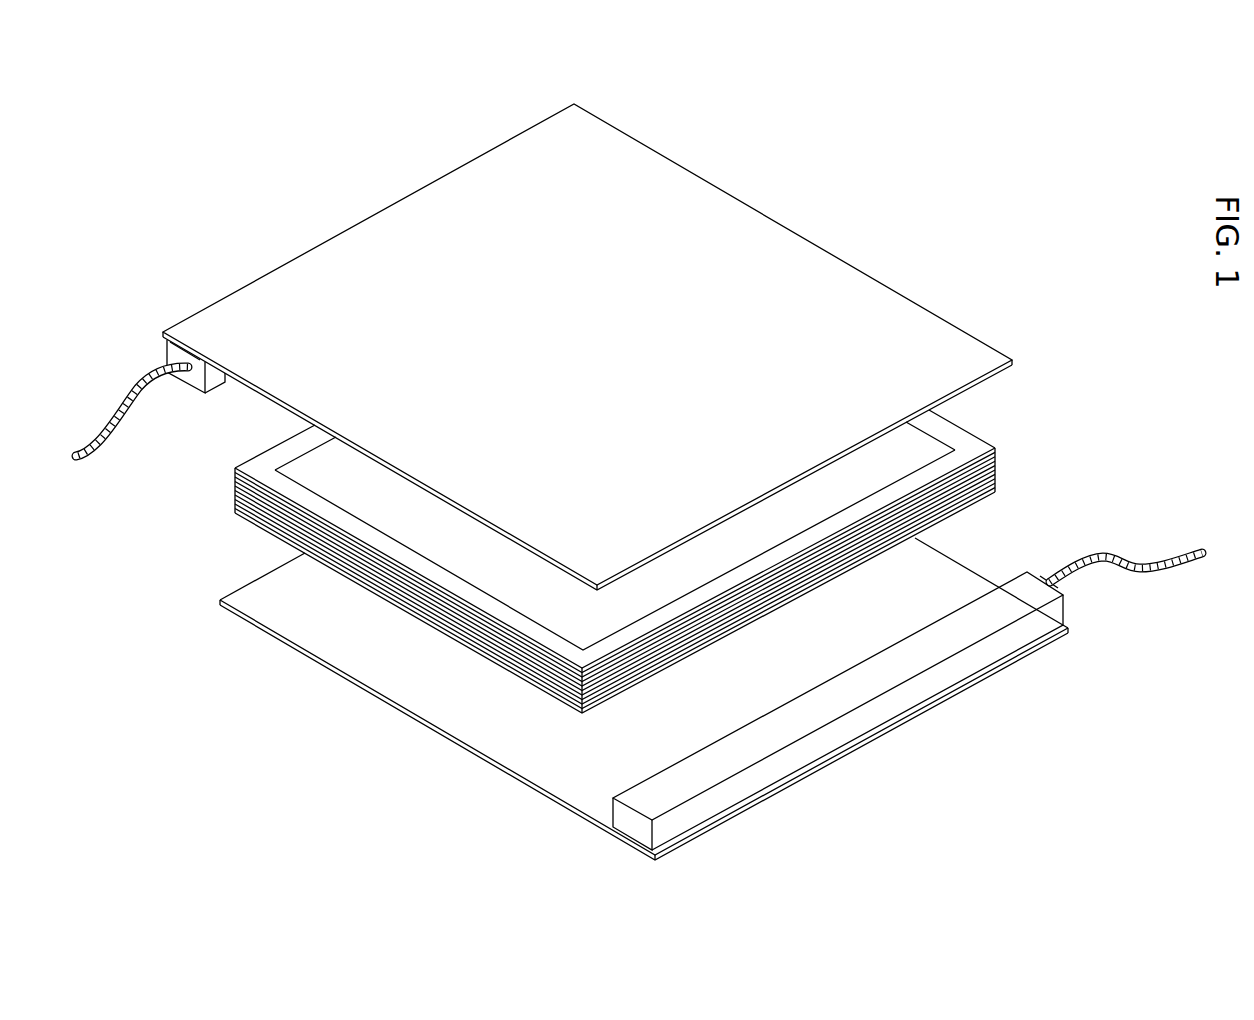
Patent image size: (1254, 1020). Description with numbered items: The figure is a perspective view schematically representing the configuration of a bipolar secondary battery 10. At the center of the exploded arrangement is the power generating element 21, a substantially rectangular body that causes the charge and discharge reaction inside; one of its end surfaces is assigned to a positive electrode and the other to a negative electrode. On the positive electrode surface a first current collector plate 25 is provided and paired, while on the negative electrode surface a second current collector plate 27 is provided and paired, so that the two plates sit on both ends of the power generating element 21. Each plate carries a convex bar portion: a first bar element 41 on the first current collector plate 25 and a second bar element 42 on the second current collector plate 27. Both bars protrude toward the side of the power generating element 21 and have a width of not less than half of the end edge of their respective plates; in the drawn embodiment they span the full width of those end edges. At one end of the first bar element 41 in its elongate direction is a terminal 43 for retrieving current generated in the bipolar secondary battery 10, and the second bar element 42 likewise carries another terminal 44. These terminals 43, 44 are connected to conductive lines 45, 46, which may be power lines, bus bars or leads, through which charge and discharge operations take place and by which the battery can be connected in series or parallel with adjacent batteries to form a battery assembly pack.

The bipolar secondary battery 10 is at (158, 140).
The power generating element 21 is at (445, 622).
The first current collector plate 25 is at (339, 258).
The second current collector plate 27 is at (566, 781).
The first bar element 41 is at (225, 384).
The second bar element 42 is at (976, 602).
The terminal 43 is at (188, 347).
The terminal 44 is at (1050, 577).
The conductive line 45 is at (141, 376).
The conductive line 46 is at (1118, 560).